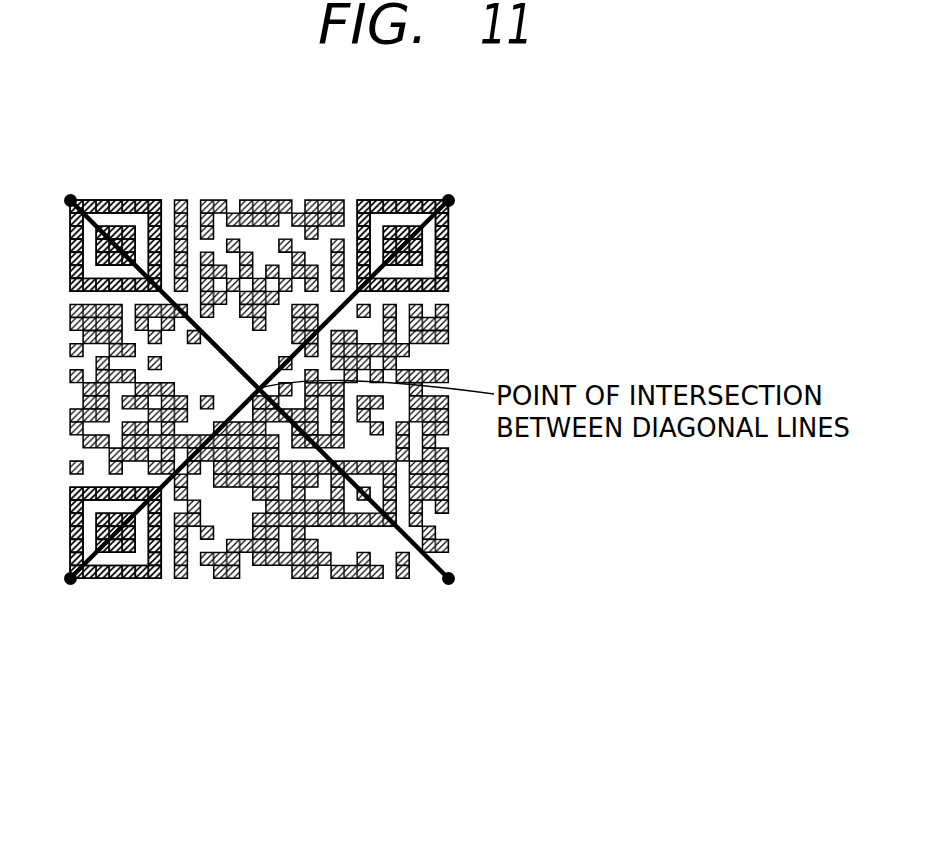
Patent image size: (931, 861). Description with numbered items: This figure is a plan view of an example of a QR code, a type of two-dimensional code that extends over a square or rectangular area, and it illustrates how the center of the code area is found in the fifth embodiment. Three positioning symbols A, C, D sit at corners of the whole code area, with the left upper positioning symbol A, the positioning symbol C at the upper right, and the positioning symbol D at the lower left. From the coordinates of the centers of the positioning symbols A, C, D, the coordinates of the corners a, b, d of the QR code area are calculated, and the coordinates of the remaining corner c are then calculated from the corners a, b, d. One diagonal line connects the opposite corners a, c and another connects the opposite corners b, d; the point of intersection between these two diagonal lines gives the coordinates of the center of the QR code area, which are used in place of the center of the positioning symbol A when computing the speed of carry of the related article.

The positioning symbol A is at (137, 199).
The positioning symbol C is at (387, 199).
The positioning symbol D is at (128, 581).
The corner of the QR code area a is at (59, 186).
The corner of the QR code area b is at (59, 587).
The corner of the QR code area c is at (458, 591).
The corner of the QR code area d is at (460, 186).